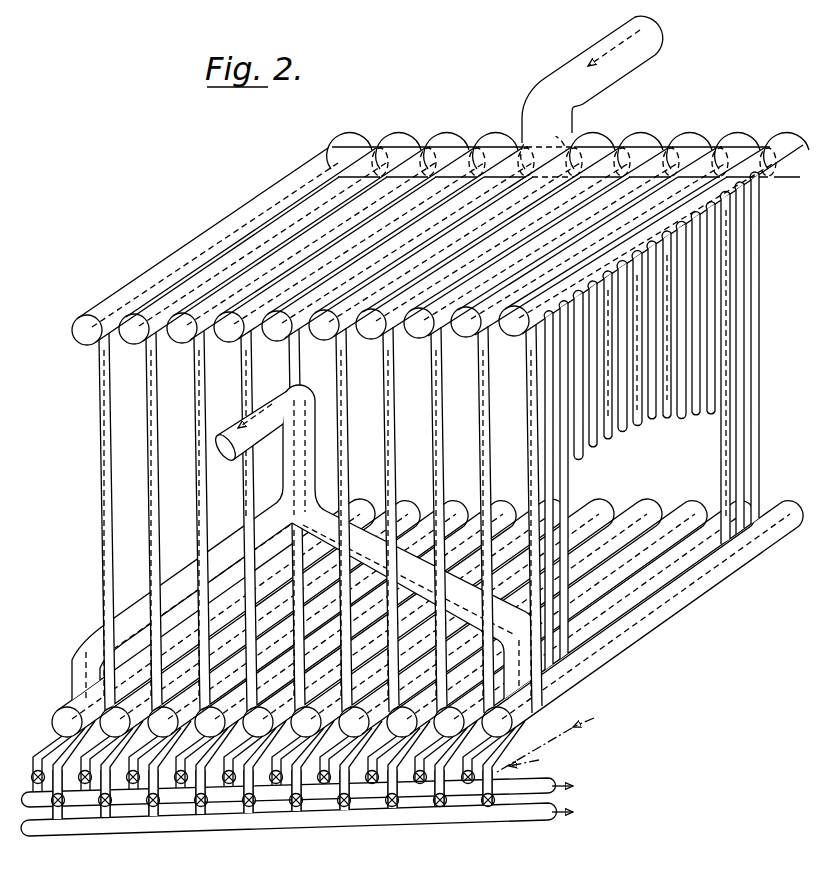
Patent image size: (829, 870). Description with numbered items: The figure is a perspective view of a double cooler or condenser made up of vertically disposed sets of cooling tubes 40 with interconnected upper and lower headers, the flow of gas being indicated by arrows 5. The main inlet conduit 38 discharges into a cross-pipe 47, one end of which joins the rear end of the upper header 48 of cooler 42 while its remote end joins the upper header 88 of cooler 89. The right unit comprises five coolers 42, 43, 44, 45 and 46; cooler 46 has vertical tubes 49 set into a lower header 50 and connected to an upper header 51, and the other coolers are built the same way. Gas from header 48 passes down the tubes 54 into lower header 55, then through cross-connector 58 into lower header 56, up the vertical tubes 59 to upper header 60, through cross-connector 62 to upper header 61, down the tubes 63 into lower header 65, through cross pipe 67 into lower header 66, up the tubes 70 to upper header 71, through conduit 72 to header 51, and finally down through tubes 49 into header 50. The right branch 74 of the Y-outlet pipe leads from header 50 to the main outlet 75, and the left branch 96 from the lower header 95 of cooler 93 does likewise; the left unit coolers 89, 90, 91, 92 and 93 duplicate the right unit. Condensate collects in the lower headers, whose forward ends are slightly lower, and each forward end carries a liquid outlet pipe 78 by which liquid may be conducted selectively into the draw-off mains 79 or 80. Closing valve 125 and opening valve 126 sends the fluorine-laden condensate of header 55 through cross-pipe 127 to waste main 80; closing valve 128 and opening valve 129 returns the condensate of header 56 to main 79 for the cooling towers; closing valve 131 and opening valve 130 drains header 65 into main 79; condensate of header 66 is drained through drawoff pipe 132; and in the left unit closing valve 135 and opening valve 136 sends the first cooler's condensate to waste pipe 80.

The flow direction arrows 5 is at (549, 738).
The main inlet conduit 38 is at (594, 79).
The upper heat exchange tubes 40 is at (165, 252).
The cooler 42 is at (595, 130).
The cooler 43 is at (641, 130).
The cooler 44 is at (687, 132).
The cooler 45 is at (746, 136).
The cooler 46 is at (788, 130).
The cross-pipe 47 is at (521, 140).
The upper header 48 is at (342, 520).
The vertically disposed tubes 49 is at (749, 264).
The lower header 50 is at (645, 625).
The upper header 51 is at (519, 340).
The tubes 54 is at (349, 426).
The lower header 55 is at (586, 506).
The lower header 56 is at (503, 606).
The cross-connector 58 is at (357, 688).
The vertical tubes 59 is at (397, 432).
The upper header 60 is at (389, 519).
The upper header 61 is at (436, 520).
The cross-connector 62 is at (646, 140).
The vertical tubes 63 is at (443, 423).
The lower header 65 is at (672, 507).
The lower header 66 is at (598, 607).
The cross pipe 67 is at (451, 688).
The vertical tubes 70 is at (490, 461).
The upper header 71 is at (483, 519).
The conduit 72 is at (740, 146).
The right branch of the Y-outlet pipe 74 is at (400, 516).
The main outlet 75 is at (238, 420).
The liquid outlet pipe 78 is at (492, 736).
The draw-off main 79 is at (512, 823).
The draw-off main 80 is at (550, 773).
The upper header 88 is at (285, 344).
The cooler 89 is at (548, 130).
The cooler 90 is at (500, 130).
The cooler 91 is at (452, 130).
The cooler 92 is at (405, 130).
The cooler 93 is at (355, 130).
The lower header 95 is at (62, 713).
The left branch of the Y-outlet pipe 96 is at (130, 602).
The valve 125 is at (243, 813).
The valve 126 is at (313, 760).
The cross-pipe 127 is at (267, 760).
The valve 128 is at (360, 760).
The valve 129 is at (292, 815).
The valve 130 is at (335, 813).
The valve 131 is at (408, 760).
The drawoff pipe 132 is at (459, 760).
The valve 135 is at (192, 813).
The valve 136 is at (220, 761).